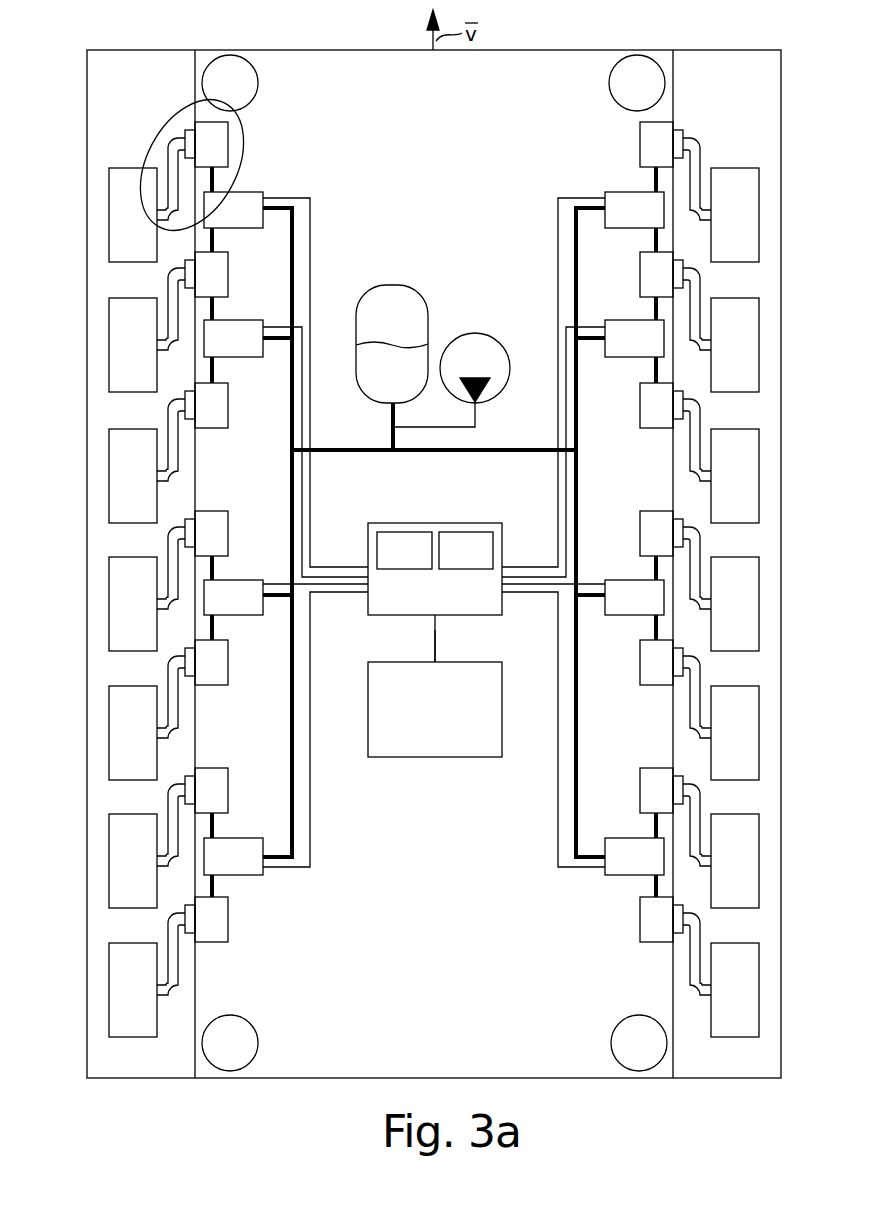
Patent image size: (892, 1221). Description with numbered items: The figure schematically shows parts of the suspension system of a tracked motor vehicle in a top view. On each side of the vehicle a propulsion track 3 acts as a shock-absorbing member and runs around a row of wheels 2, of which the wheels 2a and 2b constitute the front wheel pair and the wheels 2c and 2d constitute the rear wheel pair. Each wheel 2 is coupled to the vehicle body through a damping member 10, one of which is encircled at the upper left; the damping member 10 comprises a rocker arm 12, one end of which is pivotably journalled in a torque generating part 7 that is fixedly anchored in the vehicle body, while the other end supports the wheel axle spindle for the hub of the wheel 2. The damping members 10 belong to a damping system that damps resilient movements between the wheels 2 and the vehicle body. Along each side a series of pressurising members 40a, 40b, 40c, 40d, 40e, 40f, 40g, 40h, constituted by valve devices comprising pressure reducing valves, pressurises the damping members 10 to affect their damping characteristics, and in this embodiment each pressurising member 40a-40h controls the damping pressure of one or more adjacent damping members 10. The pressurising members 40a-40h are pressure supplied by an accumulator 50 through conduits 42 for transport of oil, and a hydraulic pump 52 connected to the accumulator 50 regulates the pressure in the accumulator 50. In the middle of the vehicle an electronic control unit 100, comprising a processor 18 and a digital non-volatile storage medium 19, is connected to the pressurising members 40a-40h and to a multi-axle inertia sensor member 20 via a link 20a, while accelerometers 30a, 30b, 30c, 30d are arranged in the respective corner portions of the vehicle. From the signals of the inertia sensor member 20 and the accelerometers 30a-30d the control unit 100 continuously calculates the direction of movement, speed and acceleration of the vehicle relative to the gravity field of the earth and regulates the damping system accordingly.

The propulsion track 3 is at (147, 102).
The wheel 2 is at (436, 620).
The front wheel 2a is at (116, 263).
The front wheel 2b is at (758, 263).
The rear wheel 2c is at (121, 1038).
The rear wheel 2d is at (743, 1038).
The torque generating part 7 is at (663, 931).
The damping member 10 is at (246, 127).
The rocker arm 12 is at (434, 562).
The accelerometer 30a is at (249, 94).
The accelerometer 30b is at (656, 94).
The accelerometer 30c is at (249, 1054).
The accelerometer 30d is at (658, 1054).
The pressurising member 40a is at (252, 222).
The pressurising member 40b is at (653, 222).
The pressurising member 40c is at (252, 350).
The pressurising member 40d is at (653, 350).
The pressurising member 40e is at (252, 609).
The pressurising member 40f is at (653, 609).
The pressurising member 40g is at (252, 868).
The pressurising member 40h is at (653, 868).
The conduit 42 is at (366, 452).
The accumulator 50 is at (378, 285).
The hydraulic pump 52 is at (474, 333).
The electronic control unit 100 is at (455, 610).
The processor 18 is at (418, 563).
The digital non-volatile storage medium 19 is at (479, 563).
The multi-axle inertia sensor member 20 is at (448, 720).
The link 20a is at (433, 646).